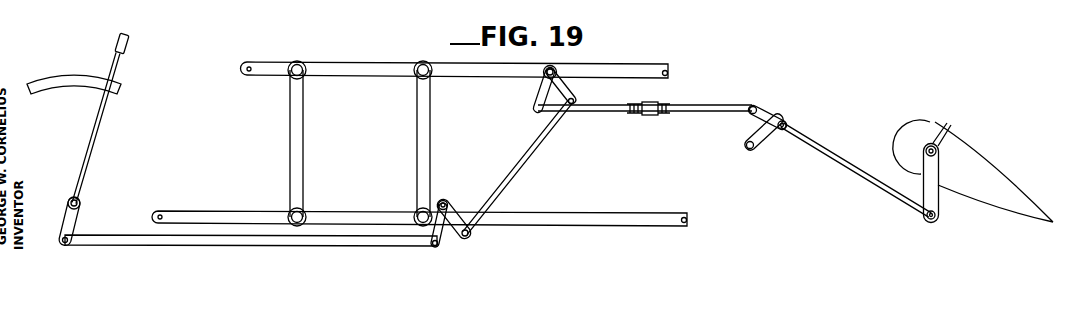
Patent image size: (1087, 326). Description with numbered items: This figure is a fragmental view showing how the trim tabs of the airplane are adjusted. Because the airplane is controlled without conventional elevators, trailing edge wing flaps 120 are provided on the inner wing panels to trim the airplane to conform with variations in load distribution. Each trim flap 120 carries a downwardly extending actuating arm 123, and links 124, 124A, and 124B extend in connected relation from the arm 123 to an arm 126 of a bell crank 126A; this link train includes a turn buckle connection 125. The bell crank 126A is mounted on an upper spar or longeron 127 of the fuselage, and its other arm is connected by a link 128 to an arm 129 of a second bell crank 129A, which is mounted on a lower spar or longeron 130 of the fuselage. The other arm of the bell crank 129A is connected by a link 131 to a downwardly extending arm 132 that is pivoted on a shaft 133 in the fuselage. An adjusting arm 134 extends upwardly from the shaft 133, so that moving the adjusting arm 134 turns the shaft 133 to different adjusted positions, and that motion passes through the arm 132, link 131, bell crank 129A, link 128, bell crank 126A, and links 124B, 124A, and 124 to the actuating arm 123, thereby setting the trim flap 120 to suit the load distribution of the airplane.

The trailing edge wing flap 120 is at (960, 143).
The actuating arm 123 is at (935, 198).
The link 124 is at (857, 172).
The link 124A is at (772, 115).
The link 124B is at (732, 113).
The turn buckle connection 125 is at (652, 118).
The arm of bell crank 126 is at (537, 96).
The bell crank 126A is at (540, 82).
The upper spar or longeron 127 is at (648, 67).
The link 128 is at (530, 160).
The arm of bell crank 129 is at (452, 236).
The bell crank 129A is at (446, 201).
The lower spar or longeron 130 is at (573, 213).
The link 131 is at (217, 238).
The downwardly extending arm 132 is at (72, 218).
The shaft 133 is at (78, 199).
The adjusting arm 134 is at (97, 133).